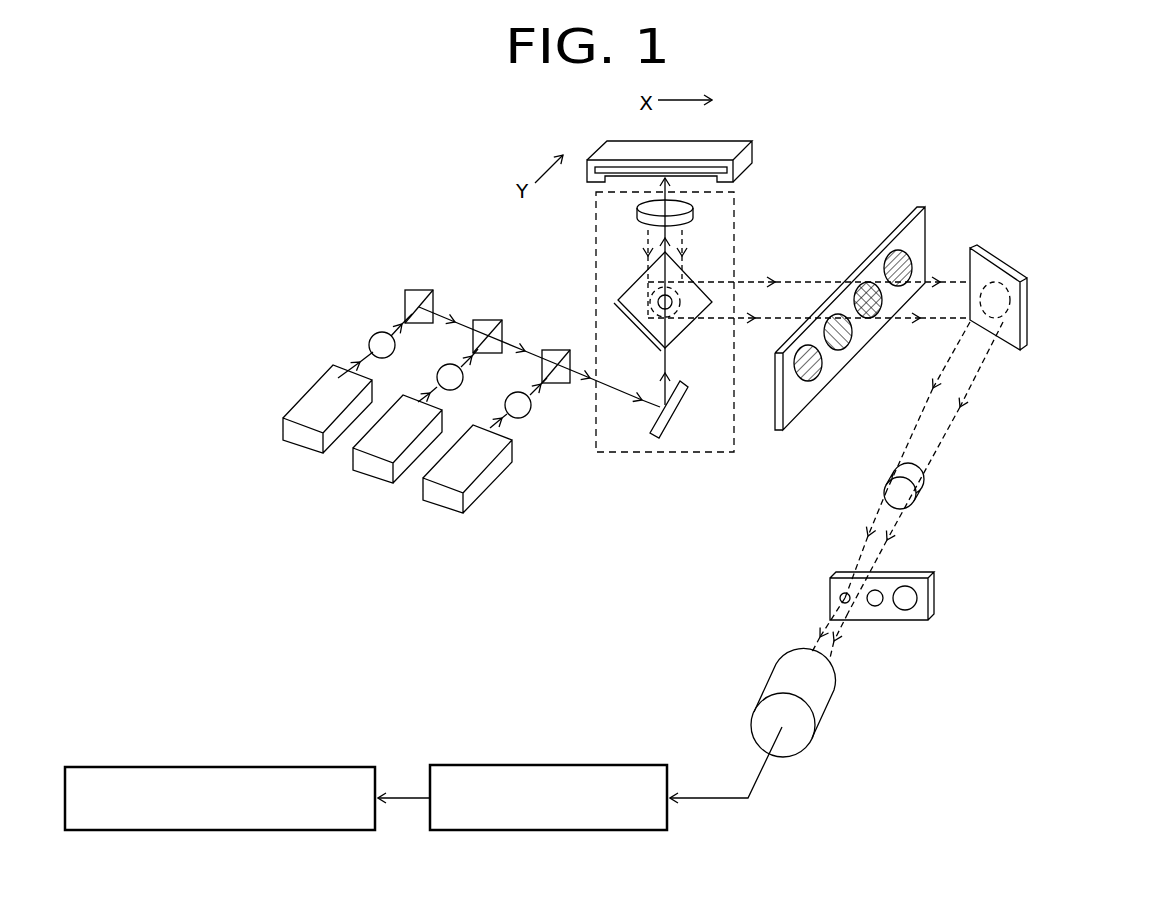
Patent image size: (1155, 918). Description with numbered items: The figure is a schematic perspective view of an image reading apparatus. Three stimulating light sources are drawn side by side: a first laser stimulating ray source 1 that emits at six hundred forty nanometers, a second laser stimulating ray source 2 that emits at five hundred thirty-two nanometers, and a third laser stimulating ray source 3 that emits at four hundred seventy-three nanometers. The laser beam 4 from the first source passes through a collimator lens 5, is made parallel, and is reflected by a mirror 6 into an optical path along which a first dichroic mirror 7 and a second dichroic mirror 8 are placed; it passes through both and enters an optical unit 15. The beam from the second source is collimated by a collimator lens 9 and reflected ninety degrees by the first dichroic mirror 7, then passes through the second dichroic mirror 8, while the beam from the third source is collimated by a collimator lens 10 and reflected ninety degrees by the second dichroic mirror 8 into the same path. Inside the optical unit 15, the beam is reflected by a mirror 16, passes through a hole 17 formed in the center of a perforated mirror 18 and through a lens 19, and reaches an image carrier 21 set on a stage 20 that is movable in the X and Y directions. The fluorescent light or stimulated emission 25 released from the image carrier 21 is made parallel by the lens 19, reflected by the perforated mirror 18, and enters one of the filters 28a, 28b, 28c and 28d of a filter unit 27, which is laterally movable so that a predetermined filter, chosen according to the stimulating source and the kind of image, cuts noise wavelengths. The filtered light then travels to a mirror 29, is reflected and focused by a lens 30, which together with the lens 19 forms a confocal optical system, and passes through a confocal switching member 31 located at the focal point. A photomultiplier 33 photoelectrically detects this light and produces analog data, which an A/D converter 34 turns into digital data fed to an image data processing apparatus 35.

The first laser stimulating ray source 1 is at (298, 441).
The second laser stimulating ray source 2 is at (368, 472).
The third laser stimulating ray source 3 is at (447, 504).
The laser beam 4 is at (447, 310).
The collimator lens 5 is at (371, 336).
The mirror 6 is at (417, 290).
The first dichroic mirror 7 is at (488, 320).
The second dichroic mirror 8 is at (557, 350).
The collimator lens 9 is at (463, 378).
The collimator lens 10 is at (531, 409).
The optical unit 15 is at (693, 453).
The mirror 16 is at (672, 422).
The hole 17 is at (657, 305).
The perforated mirror 18 is at (680, 328).
The lens 19 is at (637, 218).
The stage 20 is at (764, 147).
The image carrier 21 is at (706, 180).
The fluorescent light or stimulated emission 25 is at (684, 262).
The filter unit 27 is at (930, 220).
The filter 28a is at (813, 378).
The filter 28b is at (847, 349).
The filter 28c is at (878, 318).
The filter 28d is at (911, 262).
The mirror 29 is at (1040, 288).
The lens 30 is at (930, 489).
The confocal switching member 31 is at (943, 596).
The photomultiplier 33 is at (836, 717).
The A/D converter 34 is at (548, 797).
The image data processing apparatus 35 is at (220, 798).